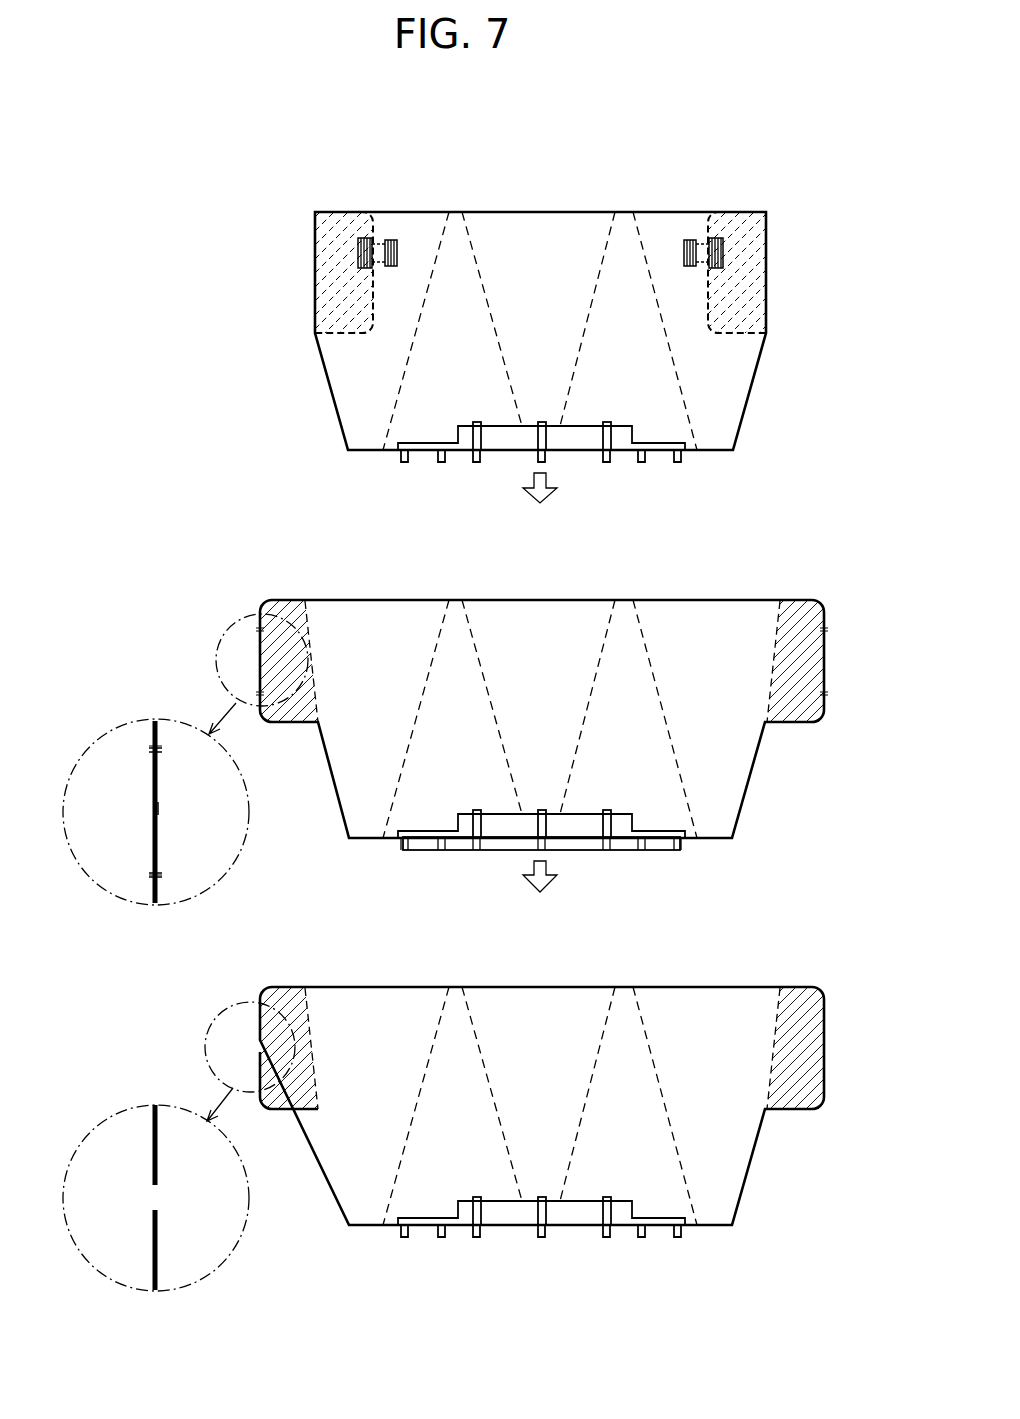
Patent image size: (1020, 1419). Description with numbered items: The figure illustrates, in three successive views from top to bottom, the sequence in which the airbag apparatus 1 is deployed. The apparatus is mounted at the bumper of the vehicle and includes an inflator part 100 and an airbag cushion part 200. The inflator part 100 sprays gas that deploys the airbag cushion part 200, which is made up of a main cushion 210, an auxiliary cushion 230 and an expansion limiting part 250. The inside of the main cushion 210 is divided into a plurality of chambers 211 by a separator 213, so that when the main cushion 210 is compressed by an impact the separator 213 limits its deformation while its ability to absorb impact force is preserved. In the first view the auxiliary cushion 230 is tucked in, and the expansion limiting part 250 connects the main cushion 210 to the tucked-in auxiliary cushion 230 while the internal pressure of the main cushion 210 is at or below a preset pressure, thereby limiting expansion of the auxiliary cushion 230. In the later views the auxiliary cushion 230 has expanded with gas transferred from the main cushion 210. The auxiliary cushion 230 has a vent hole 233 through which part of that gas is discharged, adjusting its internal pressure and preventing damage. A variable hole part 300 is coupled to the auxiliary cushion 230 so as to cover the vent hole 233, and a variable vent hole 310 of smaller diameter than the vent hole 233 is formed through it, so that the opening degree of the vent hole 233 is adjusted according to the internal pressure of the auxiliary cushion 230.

The airbag apparatus 1 is at (785, 540).
The inflator part 100 is at (457, 428).
The airbag cushion part 200 is at (347, 141).
The main cushion 210 is at (453, 177).
The chambers 211 is at (528, 268).
The separator 213 is at (646, 248).
The auxiliary cushion 230 is at (336, 222).
The vent hole 233 is at (158, 815).
The expansion limiting part 250 is at (381, 249).
The variable hole part 300 is at (152, 836).
The variable vent hole 310 is at (152, 810).